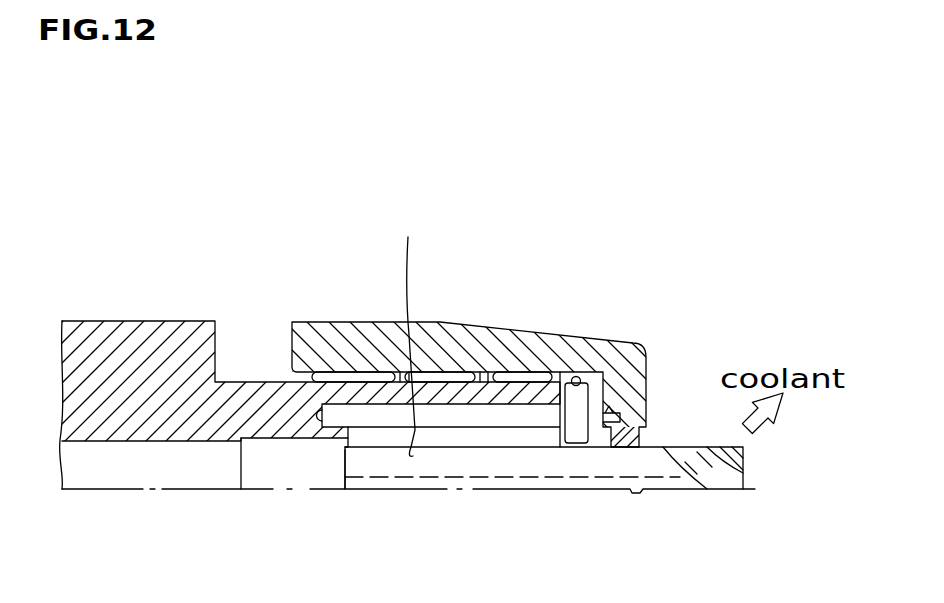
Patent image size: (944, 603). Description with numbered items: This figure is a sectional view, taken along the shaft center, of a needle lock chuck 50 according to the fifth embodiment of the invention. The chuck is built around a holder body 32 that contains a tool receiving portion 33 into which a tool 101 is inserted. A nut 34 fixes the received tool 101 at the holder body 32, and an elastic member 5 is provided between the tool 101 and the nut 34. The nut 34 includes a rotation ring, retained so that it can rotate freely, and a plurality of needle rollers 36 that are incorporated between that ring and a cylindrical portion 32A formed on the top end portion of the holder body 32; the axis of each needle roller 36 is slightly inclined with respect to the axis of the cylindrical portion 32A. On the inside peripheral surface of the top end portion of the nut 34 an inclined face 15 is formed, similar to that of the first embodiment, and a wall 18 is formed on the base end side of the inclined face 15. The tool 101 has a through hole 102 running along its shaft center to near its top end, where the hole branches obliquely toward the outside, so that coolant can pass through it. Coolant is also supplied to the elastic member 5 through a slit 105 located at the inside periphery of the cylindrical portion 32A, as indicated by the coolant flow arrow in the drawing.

The needle lock chuck 50 is at (122, 306).
The holder body 32 is at (170, 321).
The cylindrical portion 32A is at (508, 333).
The tool receiving portion 33 is at (416, 328).
The nut 34 is at (436, 333).
The needle rollers 36 is at (355, 372).
The wall 18 is at (607, 410).
The inclined face 15 is at (650, 395).
The elastic member 5 is at (640, 446).
The tool 101 is at (388, 463).
The slit 105 is at (493, 449).
The through hole 102 is at (632, 480).